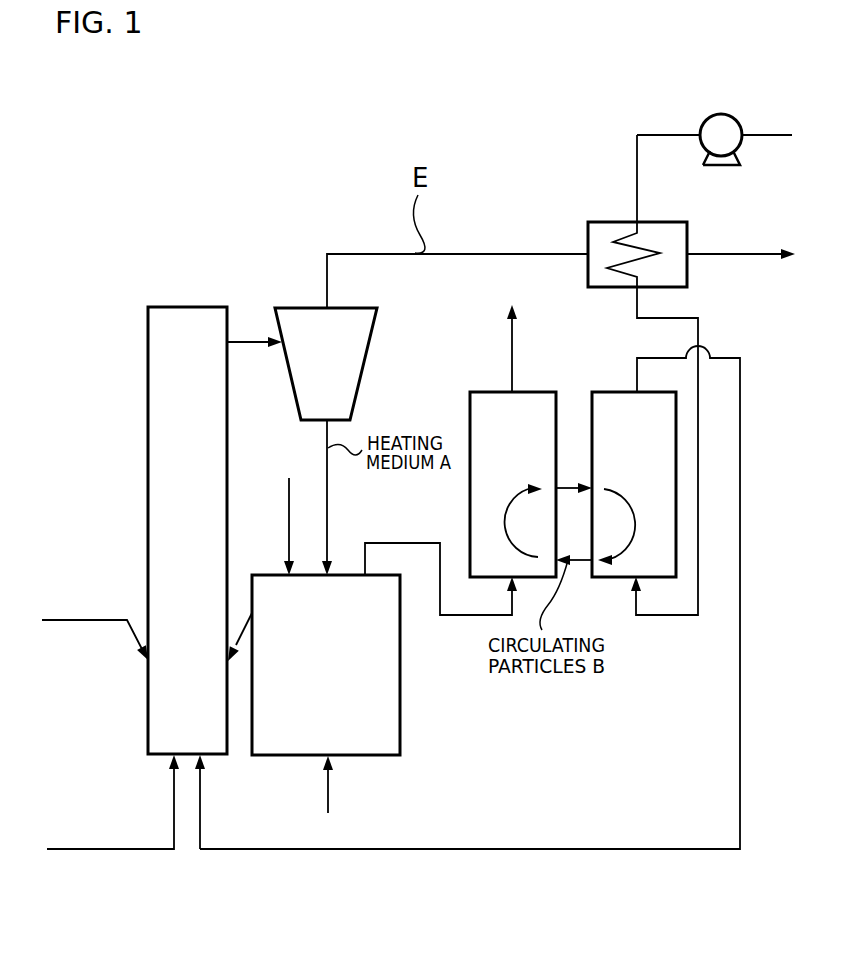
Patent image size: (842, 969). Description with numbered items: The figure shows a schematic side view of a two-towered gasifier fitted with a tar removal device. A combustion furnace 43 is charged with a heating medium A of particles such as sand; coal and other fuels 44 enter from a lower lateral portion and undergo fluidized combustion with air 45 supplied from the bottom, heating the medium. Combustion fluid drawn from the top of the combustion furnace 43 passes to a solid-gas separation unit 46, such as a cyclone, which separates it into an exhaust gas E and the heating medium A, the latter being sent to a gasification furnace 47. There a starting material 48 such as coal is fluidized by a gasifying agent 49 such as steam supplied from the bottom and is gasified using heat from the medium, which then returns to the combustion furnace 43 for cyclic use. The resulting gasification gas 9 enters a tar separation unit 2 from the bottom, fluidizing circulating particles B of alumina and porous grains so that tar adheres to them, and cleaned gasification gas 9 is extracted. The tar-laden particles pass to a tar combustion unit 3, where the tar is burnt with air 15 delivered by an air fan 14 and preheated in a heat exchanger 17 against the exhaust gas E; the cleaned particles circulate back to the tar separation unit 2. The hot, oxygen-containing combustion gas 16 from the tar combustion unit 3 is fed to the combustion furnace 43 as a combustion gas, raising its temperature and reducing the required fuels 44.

The tar separation unit 2 is at (537, 392).
The tar combustion unit 3 is at (612, 392).
The gasification gas 9 is at (512, 334).
The air fan 14 is at (722, 114).
The air 15 is at (680, 618).
The combustion gas 16 is at (598, 850).
The heat exchanger 17 is at (690, 222).
The combustion furnace 43 is at (157, 347).
The fuels 44 is at (87, 620).
The air 45 is at (82, 849).
The solid-gas separation unit 46 is at (300, 308).
The gasification furnace 47 is at (400, 738).
The starting material 48 is at (289, 520).
The gasifying agent 49 is at (330, 803).